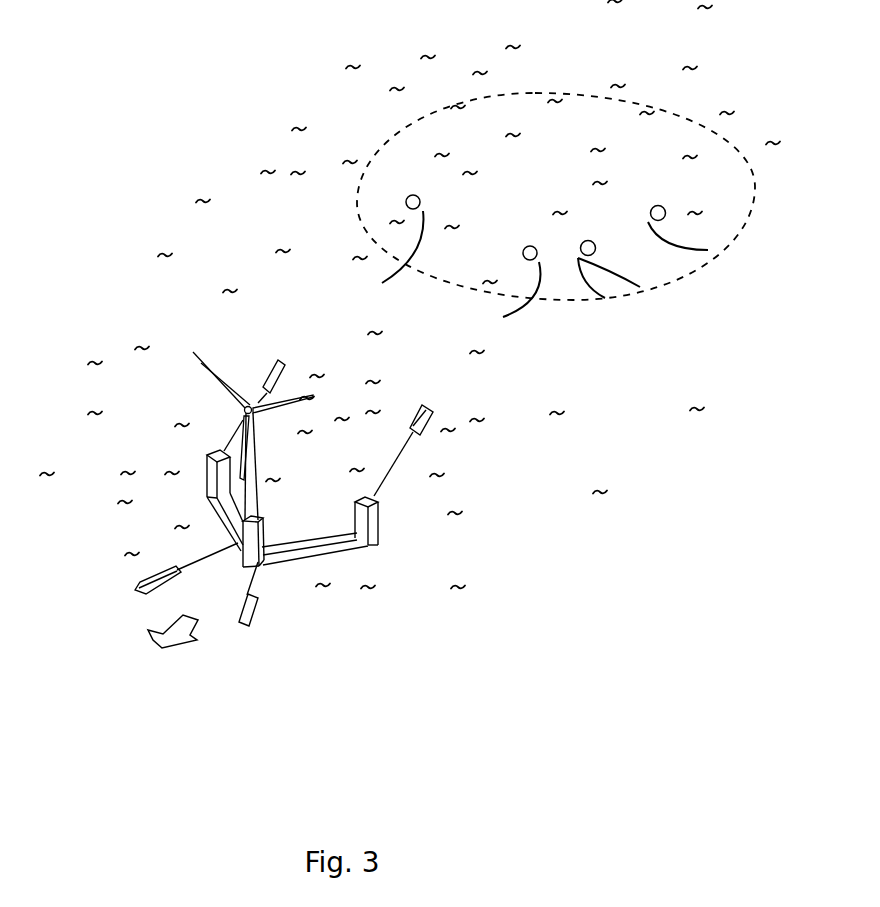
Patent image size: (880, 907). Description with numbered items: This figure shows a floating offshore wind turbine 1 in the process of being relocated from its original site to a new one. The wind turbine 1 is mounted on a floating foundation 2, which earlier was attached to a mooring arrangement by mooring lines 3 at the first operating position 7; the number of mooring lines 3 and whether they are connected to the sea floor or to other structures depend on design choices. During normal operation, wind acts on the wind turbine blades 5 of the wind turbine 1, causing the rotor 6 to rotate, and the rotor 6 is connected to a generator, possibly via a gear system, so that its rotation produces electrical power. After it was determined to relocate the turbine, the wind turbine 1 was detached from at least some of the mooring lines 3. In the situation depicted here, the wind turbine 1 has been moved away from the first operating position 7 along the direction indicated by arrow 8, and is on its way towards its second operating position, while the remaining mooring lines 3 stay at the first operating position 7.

The floating offshore wind turbine 1 is at (193, 430).
The floating foundation 2 is at (310, 545).
The mooring lines 3 is at (678, 245).
The wind turbine blades 5 is at (254, 416).
The rotor 6 is at (248, 406).
The first operating position 7 is at (643, 140).
The arrow 8 is at (173, 632).